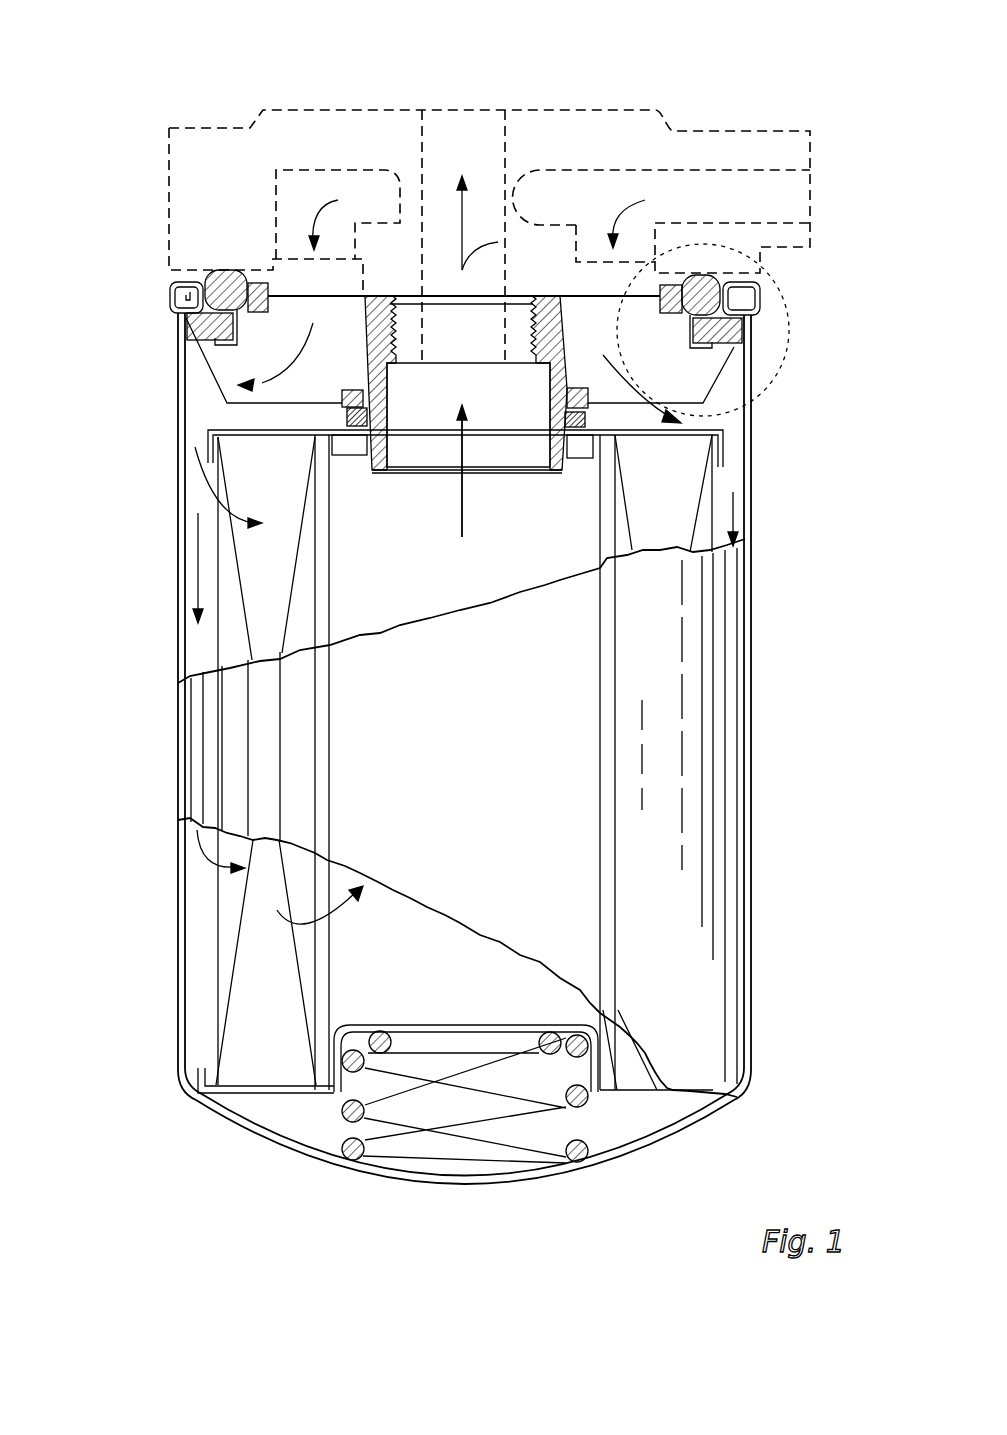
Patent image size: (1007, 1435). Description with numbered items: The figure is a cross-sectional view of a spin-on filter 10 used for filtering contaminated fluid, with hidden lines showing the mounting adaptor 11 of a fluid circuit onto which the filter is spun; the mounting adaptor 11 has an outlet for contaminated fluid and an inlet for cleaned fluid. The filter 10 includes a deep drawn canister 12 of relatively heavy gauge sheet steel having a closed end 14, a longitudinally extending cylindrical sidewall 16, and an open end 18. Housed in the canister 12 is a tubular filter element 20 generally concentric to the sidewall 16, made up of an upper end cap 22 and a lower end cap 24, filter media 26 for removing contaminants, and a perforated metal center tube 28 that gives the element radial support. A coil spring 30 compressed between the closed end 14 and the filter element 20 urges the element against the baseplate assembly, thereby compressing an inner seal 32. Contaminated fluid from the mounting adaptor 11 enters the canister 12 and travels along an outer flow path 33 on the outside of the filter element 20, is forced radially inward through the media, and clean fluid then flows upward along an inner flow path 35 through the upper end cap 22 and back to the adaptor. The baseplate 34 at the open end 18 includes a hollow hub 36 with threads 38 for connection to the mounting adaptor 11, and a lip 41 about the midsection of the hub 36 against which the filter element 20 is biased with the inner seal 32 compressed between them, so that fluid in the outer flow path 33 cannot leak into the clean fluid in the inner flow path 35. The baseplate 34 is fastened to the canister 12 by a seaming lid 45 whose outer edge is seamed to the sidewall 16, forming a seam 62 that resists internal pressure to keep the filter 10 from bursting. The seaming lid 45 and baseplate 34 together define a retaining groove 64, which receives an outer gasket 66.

The spin-on filter 10 is at (841, 610).
The mounting adaptor 11 is at (670, 124).
The canister 12 is at (667, 952).
The closed end 14 is at (470, 1177).
The cylindrical sidewall 16 is at (751, 777).
The open end 18 is at (398, 232).
The tubular filter element 20 is at (278, 1152).
The upper end cap 22 is at (290, 427).
The end cap 24 is at (228, 1088).
The filter media 26 is at (262, 955).
The perforated metal center tube 28 is at (322, 963).
The coil spring 30 is at (402, 1150).
The inner seal 32 is at (343, 430).
The outer flow path 33 is at (198, 567).
The baseplate 34 is at (182, 330).
The inner flow path 35 is at (462, 500).
The hub 36 is at (567, 367).
The threads 38 is at (395, 338).
The lip 41 is at (352, 392).
The seaming lid 45 is at (178, 283).
The seam 62 is at (113, 322).
The retaining groove 64 is at (250, 314).
The outer gasket 66 is at (218, 268).